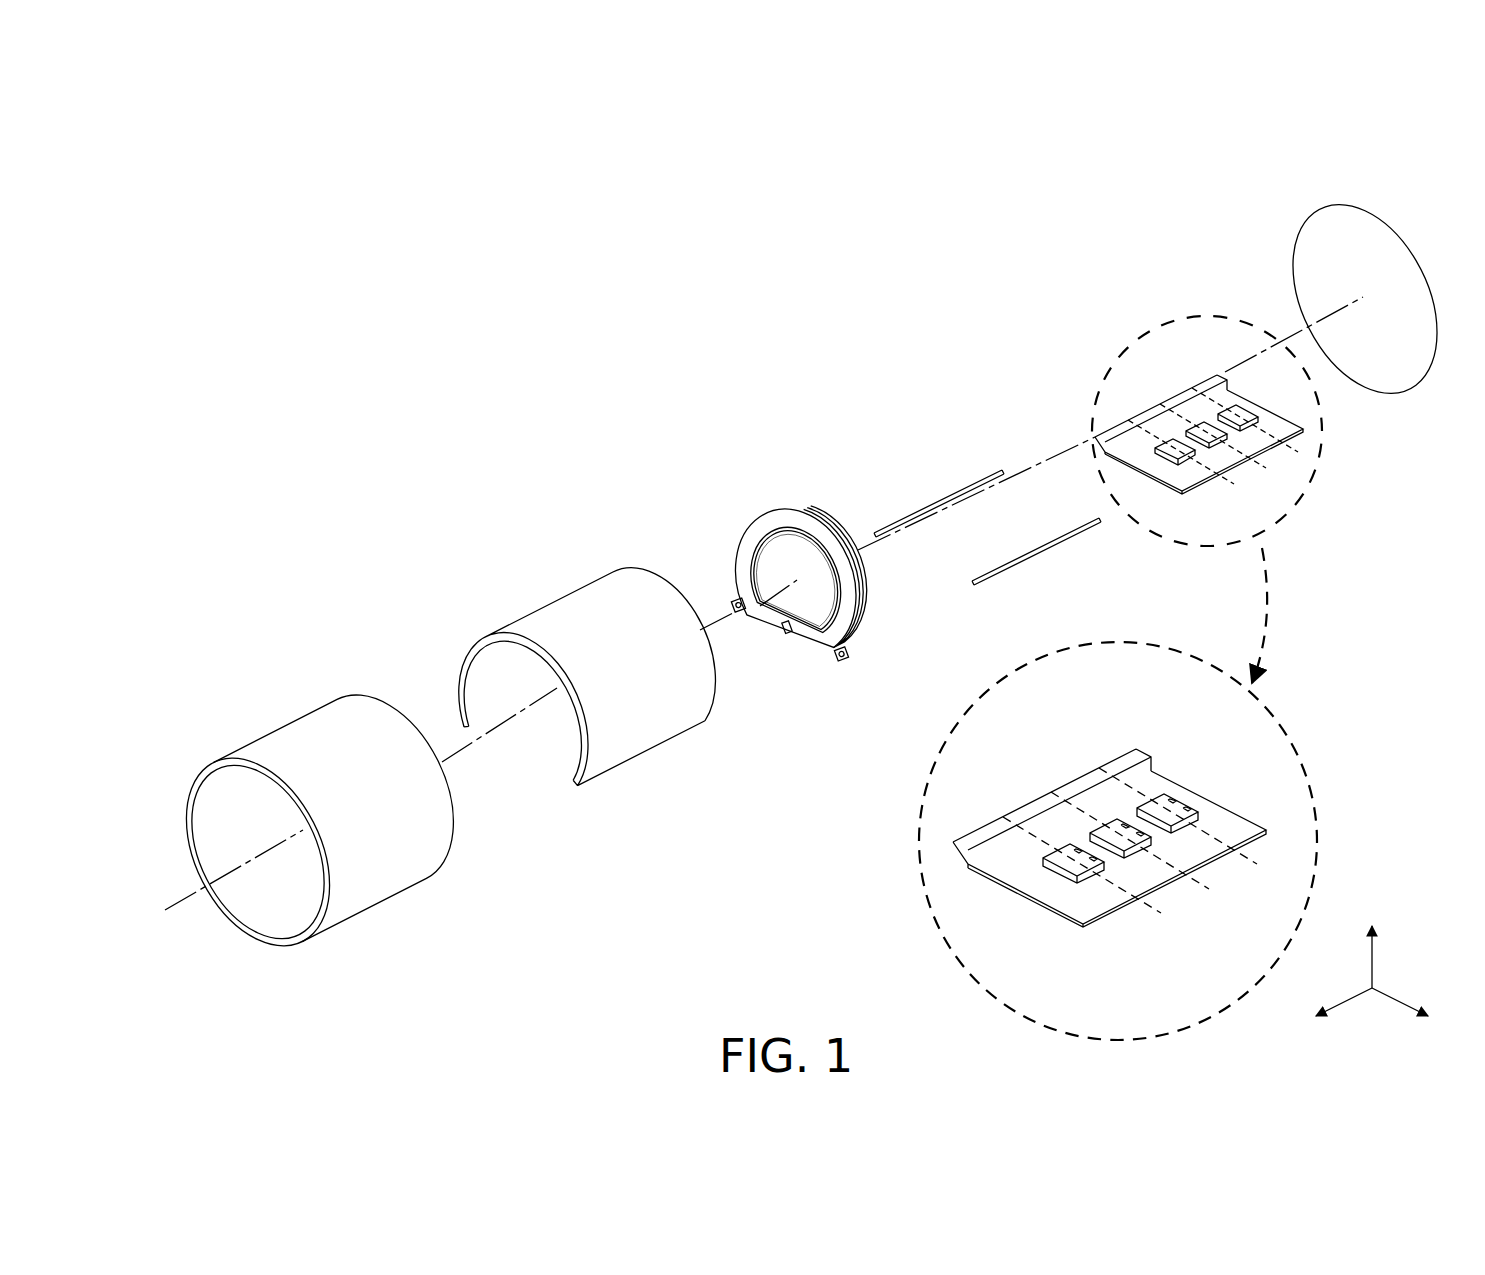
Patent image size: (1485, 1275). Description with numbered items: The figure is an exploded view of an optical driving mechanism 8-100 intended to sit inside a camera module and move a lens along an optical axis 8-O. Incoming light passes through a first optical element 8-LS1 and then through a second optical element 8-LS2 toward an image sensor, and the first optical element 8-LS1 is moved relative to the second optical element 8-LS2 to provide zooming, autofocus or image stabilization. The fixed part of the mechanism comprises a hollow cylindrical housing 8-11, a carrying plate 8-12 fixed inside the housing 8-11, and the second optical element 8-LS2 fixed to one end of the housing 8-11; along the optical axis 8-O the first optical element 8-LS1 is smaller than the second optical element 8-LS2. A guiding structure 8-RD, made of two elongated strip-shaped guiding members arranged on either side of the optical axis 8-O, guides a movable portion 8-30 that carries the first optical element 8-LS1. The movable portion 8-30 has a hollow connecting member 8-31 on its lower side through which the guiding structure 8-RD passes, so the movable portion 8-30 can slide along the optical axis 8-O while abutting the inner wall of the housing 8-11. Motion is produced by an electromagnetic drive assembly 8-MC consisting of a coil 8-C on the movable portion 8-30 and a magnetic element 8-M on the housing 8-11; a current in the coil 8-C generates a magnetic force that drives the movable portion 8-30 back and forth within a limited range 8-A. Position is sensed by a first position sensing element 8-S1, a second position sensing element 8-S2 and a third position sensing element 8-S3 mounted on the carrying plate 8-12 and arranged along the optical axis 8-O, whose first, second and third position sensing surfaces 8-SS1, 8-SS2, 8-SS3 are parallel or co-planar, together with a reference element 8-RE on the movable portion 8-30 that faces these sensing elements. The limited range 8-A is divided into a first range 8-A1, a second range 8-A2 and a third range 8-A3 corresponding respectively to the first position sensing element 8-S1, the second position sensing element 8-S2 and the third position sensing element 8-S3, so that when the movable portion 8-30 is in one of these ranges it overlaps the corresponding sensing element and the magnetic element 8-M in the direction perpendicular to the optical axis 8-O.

The optical driving mechanism 8-100 is at (183, 216).
The optical axis 8-O is at (741, 611).
The housing 8-11 is at (300, 738).
The drive assembly 8-MC is at (294, 263).
The magnetic element 8-M is at (563, 612).
The coil 8-C is at (776, 509).
The movable portion 8-30 is at (752, 531).
The connecting member 8-31 is at (732, 604).
The first optical element 8-LS1 is at (818, 604).
The reference element 8-RE is at (785, 633).
The guiding structure 8-RD is at (1070, 552).
The second optical element 8-LS2 is at (1306, 220).
The carrying plate 8-12 is at (1115, 428).
The limited range 8-A is at (452, 245).
The first range 8-A1 is at (1002, 813).
The second range 8-A2 is at (1052, 791).
The third range 8-A3 is at (1100, 769).
The first position sensing element 8-S1 is at (1103, 880).
The second position sensing element 8-S2 is at (1160, 858).
The third position sensing element 8-S3 is at (1178, 793).
The first position sensing surface 8-SS1 is at (1055, 842).
The second position sensing surface 8-SS2 is at (1113, 826).
The third position sensing surface 8-SS3 is at (1174, 795).